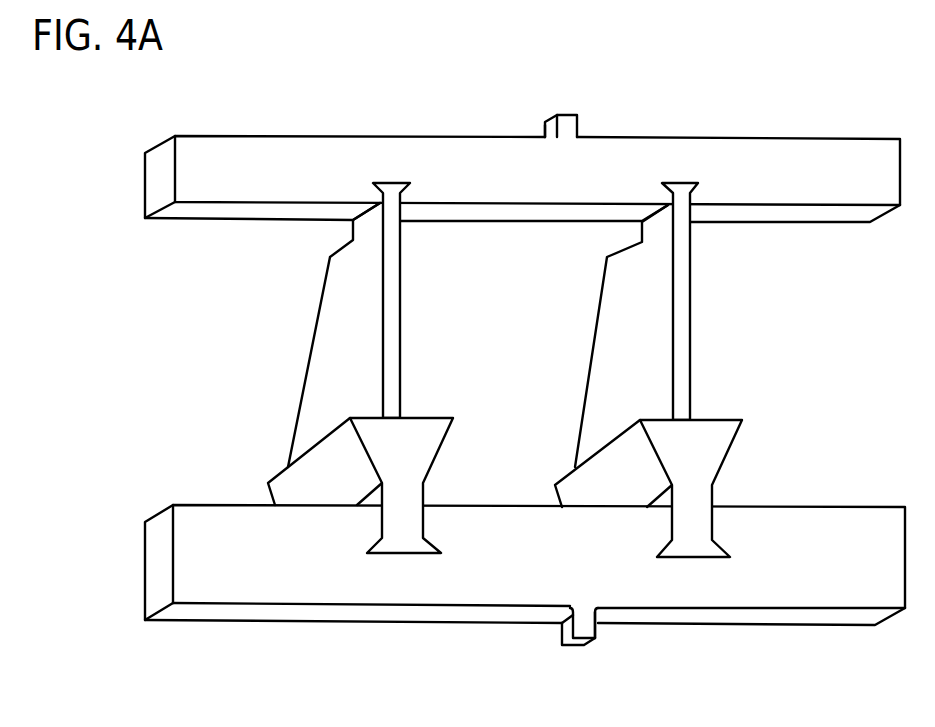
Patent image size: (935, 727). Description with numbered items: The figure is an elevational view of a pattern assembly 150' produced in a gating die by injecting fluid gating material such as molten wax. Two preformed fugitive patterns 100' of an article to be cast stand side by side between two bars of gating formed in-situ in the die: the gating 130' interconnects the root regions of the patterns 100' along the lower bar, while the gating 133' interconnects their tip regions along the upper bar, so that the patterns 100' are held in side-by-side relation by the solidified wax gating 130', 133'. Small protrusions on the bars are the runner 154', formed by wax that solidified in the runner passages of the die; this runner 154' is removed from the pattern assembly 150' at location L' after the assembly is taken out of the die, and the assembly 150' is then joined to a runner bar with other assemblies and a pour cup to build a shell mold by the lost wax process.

The preformed fugitive pattern 100' is at (505, 370).
The gating 130' is at (525, 598).
The gating 133' is at (537, 126).
The pattern assembly 150' is at (522, 134).
The runner 154' is at (576, 376).
The location L' is at (588, 367).